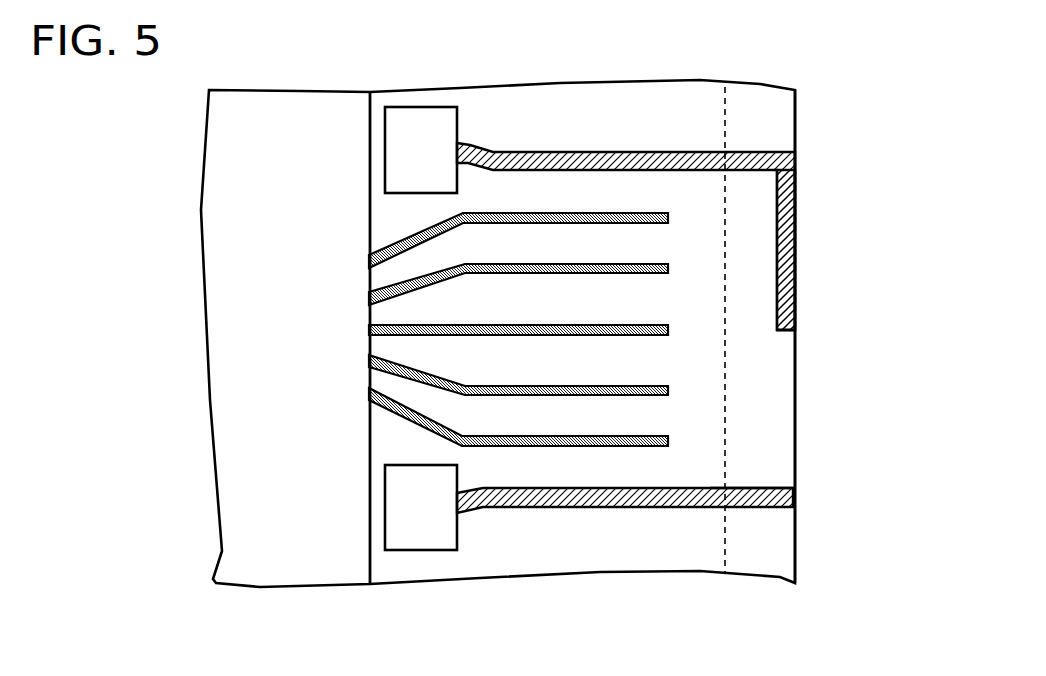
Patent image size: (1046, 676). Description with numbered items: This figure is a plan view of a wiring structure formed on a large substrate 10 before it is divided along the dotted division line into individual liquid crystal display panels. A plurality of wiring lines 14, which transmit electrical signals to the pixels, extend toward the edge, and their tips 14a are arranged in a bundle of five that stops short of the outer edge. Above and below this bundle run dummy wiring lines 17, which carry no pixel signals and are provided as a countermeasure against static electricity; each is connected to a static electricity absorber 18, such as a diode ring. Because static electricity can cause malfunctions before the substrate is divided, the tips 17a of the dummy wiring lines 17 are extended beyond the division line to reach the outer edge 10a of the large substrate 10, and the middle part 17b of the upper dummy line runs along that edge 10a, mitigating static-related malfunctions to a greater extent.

The large substrate 10 is at (566, 83).
The outer edge of the large substrate 10a is at (797, 123).
The wiring lines 14 is at (369, 263).
The tips of the wiring lines 14a is at (660, 213).
The dummy wiring lines 17 is at (497, 152).
The tips of the dummy wiring lines 17a is at (710, 152).
The middle part of the dummy wiring lines 17b is at (785, 198).
The static electricity absorbers 18 is at (400, 150).